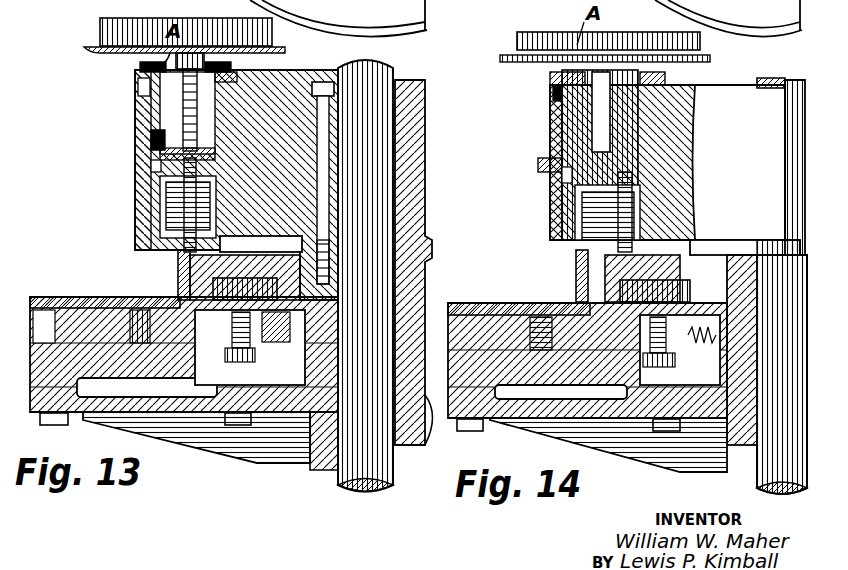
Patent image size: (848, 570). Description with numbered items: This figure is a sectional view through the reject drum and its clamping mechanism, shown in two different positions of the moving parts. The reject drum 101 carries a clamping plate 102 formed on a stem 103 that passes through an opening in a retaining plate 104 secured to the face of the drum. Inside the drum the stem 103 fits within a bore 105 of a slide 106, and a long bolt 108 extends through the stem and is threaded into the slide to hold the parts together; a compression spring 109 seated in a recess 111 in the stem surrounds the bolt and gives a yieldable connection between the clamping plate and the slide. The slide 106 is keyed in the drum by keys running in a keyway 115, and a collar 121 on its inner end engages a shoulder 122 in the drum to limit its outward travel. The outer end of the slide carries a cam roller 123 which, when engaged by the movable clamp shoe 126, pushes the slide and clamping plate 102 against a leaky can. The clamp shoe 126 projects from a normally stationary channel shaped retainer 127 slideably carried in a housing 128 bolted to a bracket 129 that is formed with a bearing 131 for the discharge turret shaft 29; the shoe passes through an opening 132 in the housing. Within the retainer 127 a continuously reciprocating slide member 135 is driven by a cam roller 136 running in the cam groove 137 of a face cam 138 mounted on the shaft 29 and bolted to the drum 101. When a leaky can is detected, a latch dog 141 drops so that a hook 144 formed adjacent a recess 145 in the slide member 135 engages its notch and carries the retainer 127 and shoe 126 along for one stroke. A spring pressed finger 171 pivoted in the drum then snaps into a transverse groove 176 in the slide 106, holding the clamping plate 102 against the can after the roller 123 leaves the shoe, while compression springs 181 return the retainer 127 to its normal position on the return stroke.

In FIG. 13, the discharge turret shaft 29 is at (357, 446).
In FIG. 14, the discharge turret shaft 29 is at (766, 480).
In FIG. 13, the reject drum 101 is at (412, 123).
In FIG. 14, the reject drum 101 is at (667, 162).
In FIG. 13, the clamping plate 102 is at (105, 51).
In FIG. 14, the clamping plate 102 is at (704, 60).
In FIG. 13, the stem 103 is at (238, 77).
In FIG. 13, the retaining plate 104 is at (140, 78).
In FIG. 14, the retaining plate 104 is at (665, 80).
In FIG. 13, the bore 105 is at (214, 131).
In FIG. 13, the slide 106 is at (157, 138).
In FIG. 14, the slide 106 is at (575, 114).
In FIG. 13, the long bolt 108 is at (190, 54).
In FIG. 13, the compression spring 109 is at (168, 147).
In FIG. 13, the recess 111 is at (205, 109).
In FIG. 14, the keyway 115 is at (588, 133).
In FIG. 13, the collar 121 is at (138, 89).
In FIG. 14, the collar 121 is at (557, 86).
In FIG. 13, the shoulder 122 is at (148, 106).
In FIG. 14, the shoulder 122 is at (560, 99).
In FIG. 13, the cam roller 123 is at (183, 204).
In FIG. 14, the cam roller 123 is at (600, 213).
In FIG. 13, the clamp shoe 126 is at (178, 247).
In FIG. 14, the clamp shoe 126 is at (576, 253).
In FIG. 13, the retainer 127 is at (64, 298).
In FIG. 14, the retainer 127 is at (462, 302).
In FIG. 13, the housing 128 is at (42, 372).
In FIG. 14, the housing 128 is at (468, 380).
In FIG. 13, the bracket 129 is at (238, 440).
In FIG. 14, the bracket 129 is at (592, 441).
In FIG. 13, the bearing 131 is at (405, 448).
In FIG. 13, the opening 132 is at (36, 298).
In FIG. 13, the slide member 135 is at (67, 334).
In FIG. 14, the slide member 135 is at (570, 330).
In FIG. 13, the cam roller 136 is at (272, 250).
In FIG. 14, the cam roller 136 is at (653, 270).
In FIG. 13, the cam groove 137 is at (213, 289).
In FIG. 14, the cam groove 137 is at (684, 291).
In FIG. 13, the face cam 138 is at (205, 268).
In FIG. 14, the face cam 138 is at (605, 270).
In FIG. 13, the latch dog 141 is at (138, 338).
In FIG. 13, the hook 144 is at (100, 298).
In FIG. 14, the hook 144 is at (530, 335).
In FIG. 13, the recess 145 is at (250, 347).
In FIG. 14, the recess 145 is at (537, 347).
In FIG. 13, the spring pressed finger 171 is at (148, 166).
In FIG. 14, the spring pressed finger 171 is at (538, 163).
In FIG. 13, the transverse groove 176 is at (160, 196).
In FIG. 14, the transverse groove 176 is at (560, 180).
In FIG. 13, the compression spring 181 is at (280, 330).
In FIG. 14, the compression spring 181 is at (680, 350).